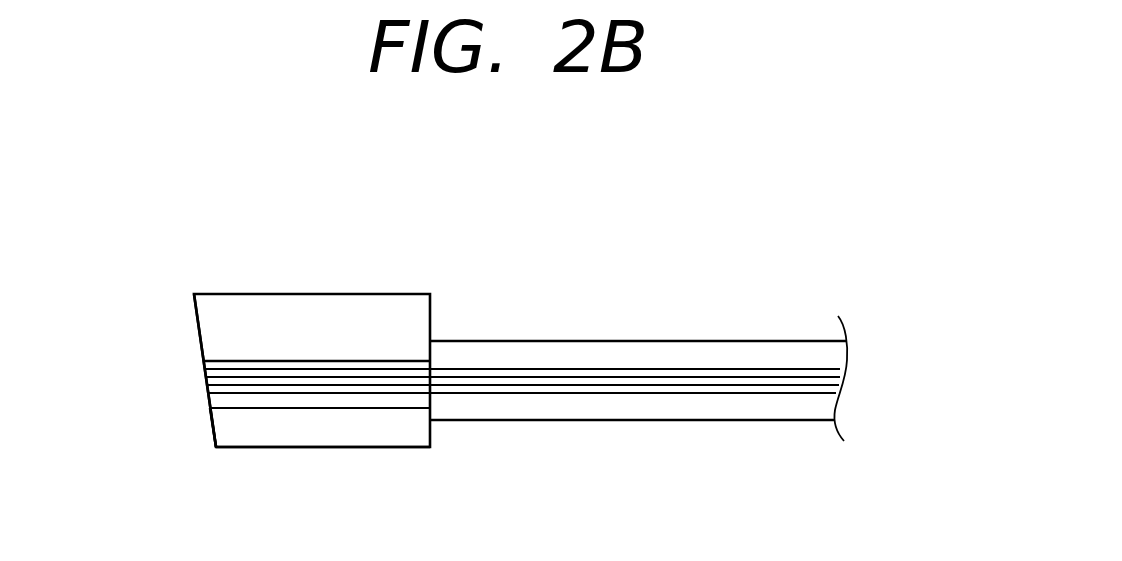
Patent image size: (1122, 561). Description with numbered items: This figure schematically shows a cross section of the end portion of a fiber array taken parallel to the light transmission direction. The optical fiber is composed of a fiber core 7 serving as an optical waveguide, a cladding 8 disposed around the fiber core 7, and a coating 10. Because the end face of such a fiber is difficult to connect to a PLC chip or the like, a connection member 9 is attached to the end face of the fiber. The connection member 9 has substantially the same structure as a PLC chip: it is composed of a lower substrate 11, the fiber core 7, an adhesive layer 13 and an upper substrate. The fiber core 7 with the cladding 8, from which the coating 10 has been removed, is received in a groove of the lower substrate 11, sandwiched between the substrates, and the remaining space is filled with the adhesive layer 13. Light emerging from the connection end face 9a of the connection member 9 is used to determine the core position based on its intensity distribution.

The fiber core 7 is at (665, 378).
The cladding 8 is at (584, 393).
The connection member 9 is at (340, 245).
The connection end face 9a is at (198, 320).
The coating 10 is at (779, 407).
The lower substrate 11 is at (307, 430).
The adhesive layer 13 is at (283, 361).